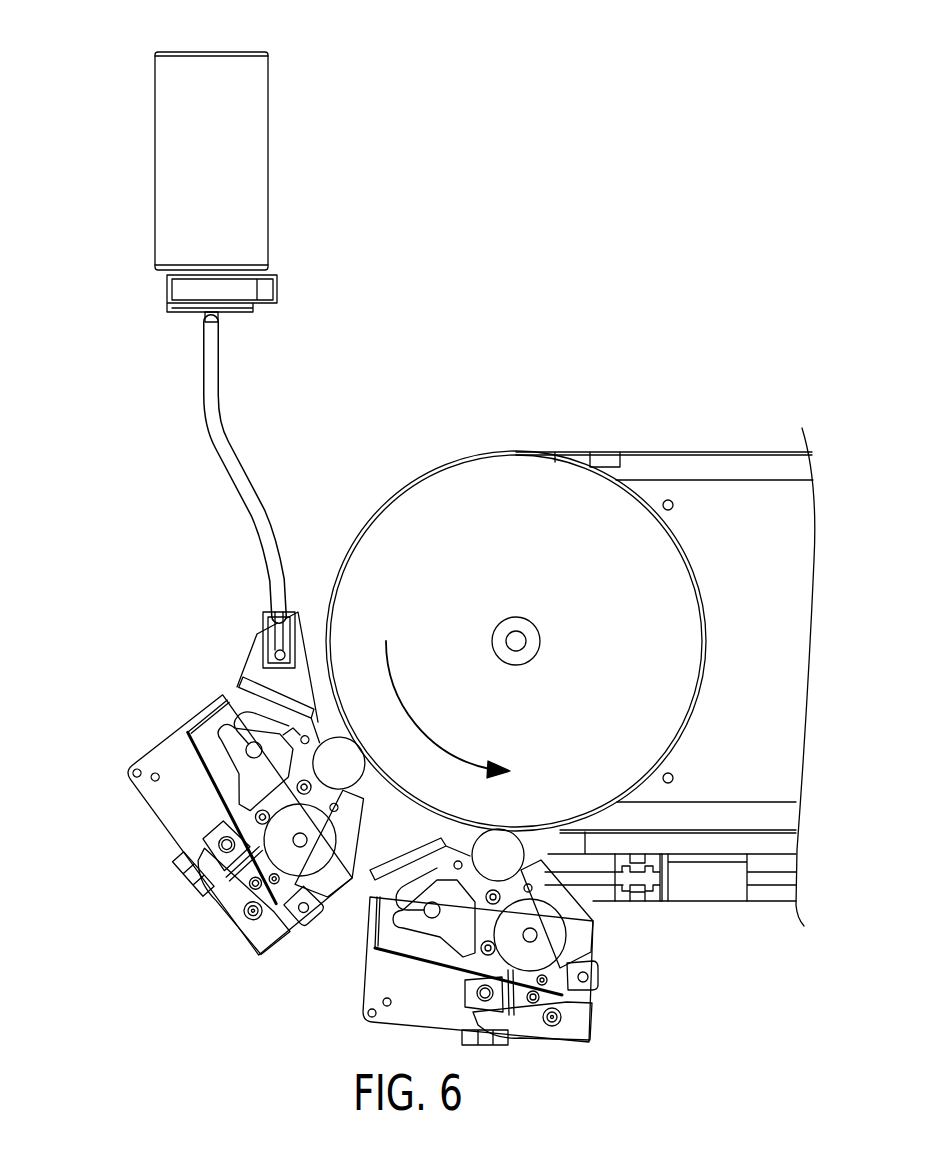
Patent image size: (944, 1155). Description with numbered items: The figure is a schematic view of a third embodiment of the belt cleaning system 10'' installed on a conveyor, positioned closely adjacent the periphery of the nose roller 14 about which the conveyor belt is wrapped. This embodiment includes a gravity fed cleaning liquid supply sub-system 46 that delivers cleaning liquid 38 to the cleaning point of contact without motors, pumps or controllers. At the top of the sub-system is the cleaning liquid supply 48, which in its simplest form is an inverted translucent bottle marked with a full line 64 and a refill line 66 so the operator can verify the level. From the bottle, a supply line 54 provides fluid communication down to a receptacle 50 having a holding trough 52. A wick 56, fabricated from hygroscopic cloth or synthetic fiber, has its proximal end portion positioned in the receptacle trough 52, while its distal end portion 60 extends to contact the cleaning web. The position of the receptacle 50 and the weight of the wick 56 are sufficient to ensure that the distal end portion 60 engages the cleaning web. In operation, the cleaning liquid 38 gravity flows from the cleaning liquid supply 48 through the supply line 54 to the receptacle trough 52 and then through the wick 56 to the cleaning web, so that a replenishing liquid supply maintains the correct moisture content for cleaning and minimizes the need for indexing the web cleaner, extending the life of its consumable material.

The belt cleaning system 10'' is at (115, 566).
The nose roller 14 is at (547, 543).
The cleaning liquid 38 is at (240, 163).
The cleaning liquid supply sub-system 46 is at (363, 367).
The cleaning liquid supply 48 is at (268, 173).
The receptacle 50 is at (257, 635).
The holding trough 52 is at (266, 613).
The supply line 54 is at (222, 458).
The wick 56 is at (302, 652).
The distal end portion 60 is at (291, 729).
The full line 64 is at (268, 82).
The refill line 66 is at (268, 247).